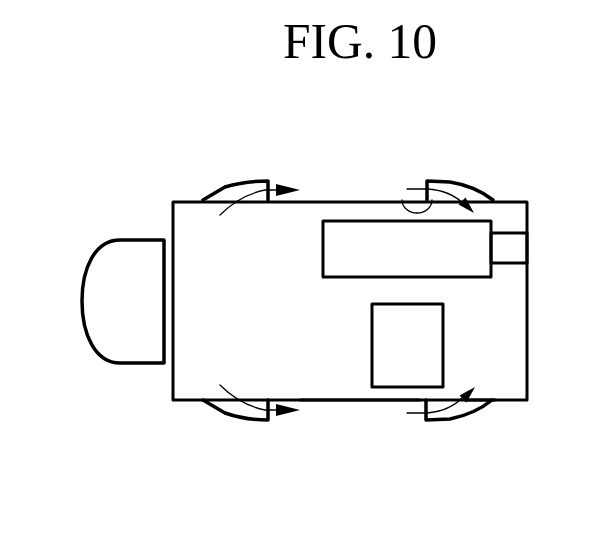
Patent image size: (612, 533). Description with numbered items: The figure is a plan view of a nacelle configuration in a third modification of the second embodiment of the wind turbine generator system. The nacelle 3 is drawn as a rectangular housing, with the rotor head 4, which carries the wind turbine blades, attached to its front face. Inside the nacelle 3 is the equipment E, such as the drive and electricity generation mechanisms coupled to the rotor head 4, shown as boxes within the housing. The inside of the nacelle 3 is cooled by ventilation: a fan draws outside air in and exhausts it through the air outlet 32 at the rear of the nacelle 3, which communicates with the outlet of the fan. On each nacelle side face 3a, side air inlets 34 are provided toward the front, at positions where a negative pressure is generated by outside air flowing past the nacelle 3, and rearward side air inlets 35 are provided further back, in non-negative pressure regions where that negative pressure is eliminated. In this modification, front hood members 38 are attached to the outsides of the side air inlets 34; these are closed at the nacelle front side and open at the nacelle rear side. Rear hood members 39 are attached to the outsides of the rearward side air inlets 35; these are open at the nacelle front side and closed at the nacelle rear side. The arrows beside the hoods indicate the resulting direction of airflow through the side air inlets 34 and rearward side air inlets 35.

The nacelle 3 is at (528, 342).
The nacelle side face 3a is at (360, 401).
The rotor head 4 is at (82, 300).
The air outlet 32 is at (530, 245).
The side air inlet 34 is at (255, 201).
The rearward side air inlet 35 is at (403, 200).
The front hood member 38 is at (255, 183).
The rear hood member 39 is at (450, 183).
The equipment E is at (332, 278).